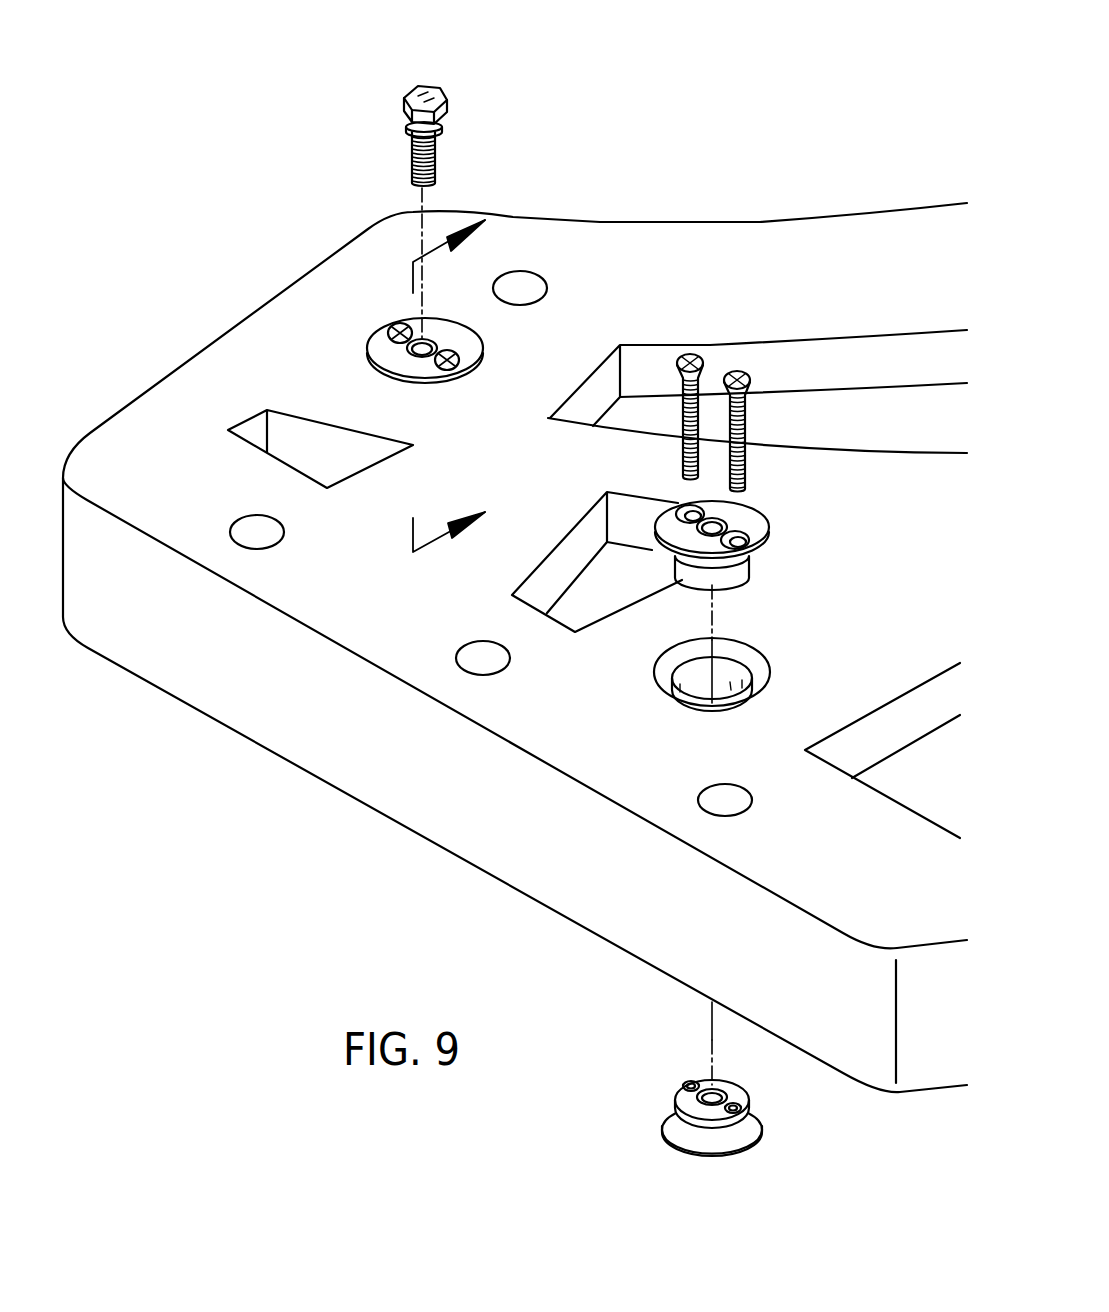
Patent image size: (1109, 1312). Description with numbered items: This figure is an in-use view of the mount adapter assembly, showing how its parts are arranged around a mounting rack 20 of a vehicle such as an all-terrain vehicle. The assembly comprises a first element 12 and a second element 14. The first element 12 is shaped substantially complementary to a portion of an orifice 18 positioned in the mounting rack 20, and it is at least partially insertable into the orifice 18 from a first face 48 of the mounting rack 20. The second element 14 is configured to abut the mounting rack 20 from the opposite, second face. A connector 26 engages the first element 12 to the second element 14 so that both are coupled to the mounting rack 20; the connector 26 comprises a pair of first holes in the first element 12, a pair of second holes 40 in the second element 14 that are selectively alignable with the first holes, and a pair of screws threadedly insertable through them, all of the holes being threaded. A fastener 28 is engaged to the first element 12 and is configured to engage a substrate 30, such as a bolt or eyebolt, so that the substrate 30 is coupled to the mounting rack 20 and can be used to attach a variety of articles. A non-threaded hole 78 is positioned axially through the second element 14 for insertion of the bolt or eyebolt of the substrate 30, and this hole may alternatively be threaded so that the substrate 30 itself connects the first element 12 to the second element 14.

The first element 12 is at (377, 347).
The second element 14 is at (678, 1133).
The orifice 18 is at (700, 687).
The mounting rack 20 is at (174, 418).
The connector 26 is at (748, 397).
The fastener 28 is at (418, 337).
The substrate 30 is at (438, 135).
The second holes 40 is at (737, 1100).
The first face 48 is at (869, 602).
The non-threaded hole 78 is at (713, 1107).